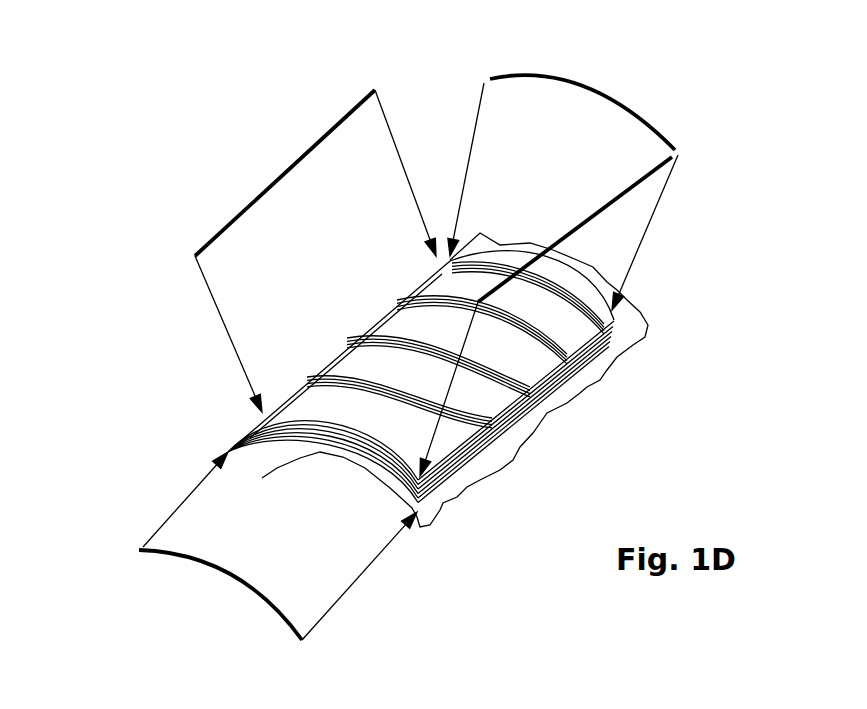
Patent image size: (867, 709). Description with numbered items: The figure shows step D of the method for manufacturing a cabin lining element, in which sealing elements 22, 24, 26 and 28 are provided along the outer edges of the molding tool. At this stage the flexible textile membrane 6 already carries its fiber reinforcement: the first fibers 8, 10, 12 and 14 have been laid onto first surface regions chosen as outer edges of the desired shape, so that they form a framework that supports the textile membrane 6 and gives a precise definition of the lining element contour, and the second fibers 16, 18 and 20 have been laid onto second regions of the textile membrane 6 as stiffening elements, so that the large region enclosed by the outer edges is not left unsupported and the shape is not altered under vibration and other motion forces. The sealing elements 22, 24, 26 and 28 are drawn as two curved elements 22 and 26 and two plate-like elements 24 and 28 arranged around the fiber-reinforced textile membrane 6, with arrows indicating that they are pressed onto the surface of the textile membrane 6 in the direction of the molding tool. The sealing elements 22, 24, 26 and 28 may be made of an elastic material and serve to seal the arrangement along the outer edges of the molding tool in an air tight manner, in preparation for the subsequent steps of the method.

The textile membrane 6 is at (587, 368).
The first fiber 8 is at (307, 447).
The first fiber 10 is at (360, 367).
The first fiber 12 is at (505, 264).
The first fiber 14 is at (488, 437).
The second fiber 16 is at (347, 375).
The second fiber 18 is at (400, 337).
The second fiber 20 is at (445, 295).
The sealing element 22 is at (208, 560).
The sealing element 24 is at (613, 205).
The sealing element 26 is at (573, 82).
The sealing element 28 is at (293, 163).